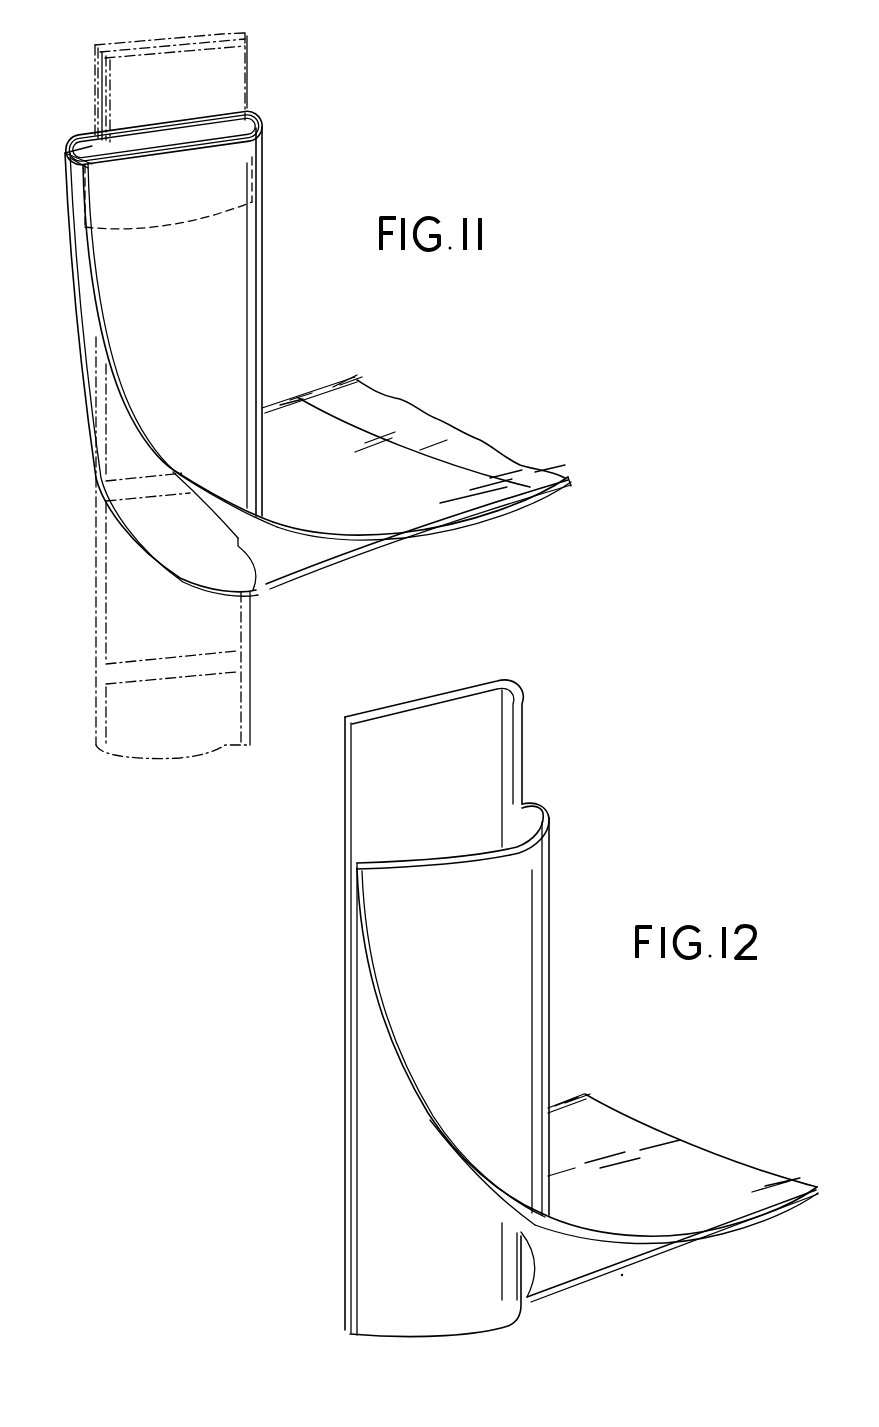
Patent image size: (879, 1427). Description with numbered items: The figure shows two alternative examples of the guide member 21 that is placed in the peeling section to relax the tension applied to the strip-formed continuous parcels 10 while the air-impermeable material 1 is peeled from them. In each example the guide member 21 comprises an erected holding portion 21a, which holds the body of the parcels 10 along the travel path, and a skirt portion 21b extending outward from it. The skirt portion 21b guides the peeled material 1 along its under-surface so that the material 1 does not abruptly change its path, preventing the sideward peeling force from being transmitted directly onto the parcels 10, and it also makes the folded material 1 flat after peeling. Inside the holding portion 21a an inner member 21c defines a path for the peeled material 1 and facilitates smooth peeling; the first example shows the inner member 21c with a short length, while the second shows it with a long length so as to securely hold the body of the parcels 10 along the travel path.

In FIG. 11, the strip-formed continuous parcels 10 is at (93, 63).
In FIG. 11, the air-impermeable material 1 is at (398, 412).
In FIG. 11, the guide member 21 is at (317, 341).
In FIG. 12, the guide member 21 is at (581, 1008).
In FIG. 11, the holding portion 21a is at (243, 250).
In FIG. 12, the holding portion 21a is at (537, 876).
In FIG. 11, the skirt portion 21b is at (270, 403).
In FIG. 12, the skirt portion 21b is at (597, 1118).
In FIG. 11, the inner member 21c is at (202, 138).
In FIG. 12, the inner member 21c is at (510, 776).